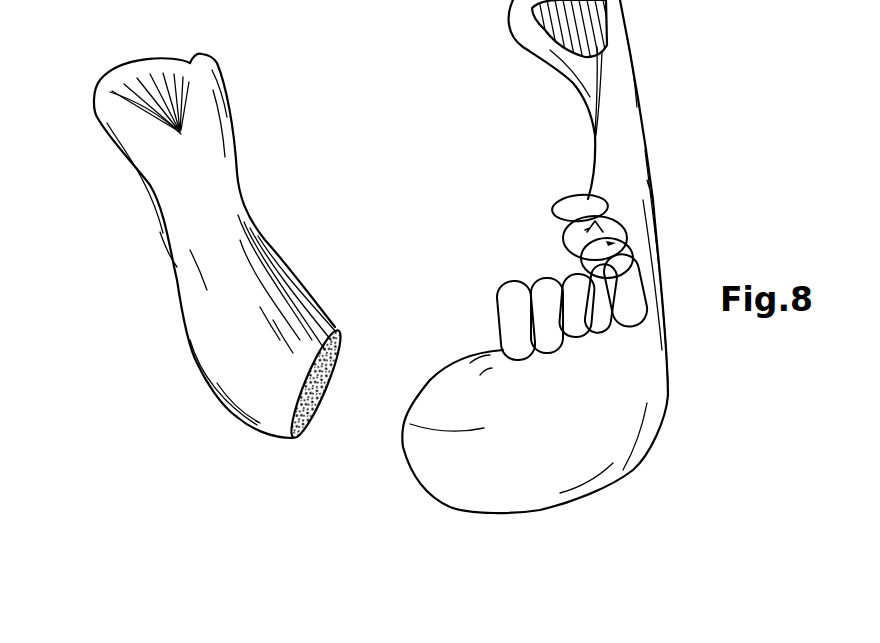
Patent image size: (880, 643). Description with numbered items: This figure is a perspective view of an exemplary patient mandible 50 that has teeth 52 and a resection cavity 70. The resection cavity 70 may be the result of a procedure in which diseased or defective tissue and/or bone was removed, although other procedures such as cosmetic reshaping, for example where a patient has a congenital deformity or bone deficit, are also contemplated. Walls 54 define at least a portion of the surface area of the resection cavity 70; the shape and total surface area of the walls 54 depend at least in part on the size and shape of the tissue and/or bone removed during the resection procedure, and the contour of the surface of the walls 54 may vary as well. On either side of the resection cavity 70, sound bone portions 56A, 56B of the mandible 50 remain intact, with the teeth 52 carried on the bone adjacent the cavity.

The patient mandible 50 is at (217, 300).
The teeth 52 is at (542, 295).
The walls 54 is at (310, 377).
The sound bone portion 56A is at (251, 452).
The sound bone portion 56B is at (562, 513).
The resection cavity 70 is at (374, 358).